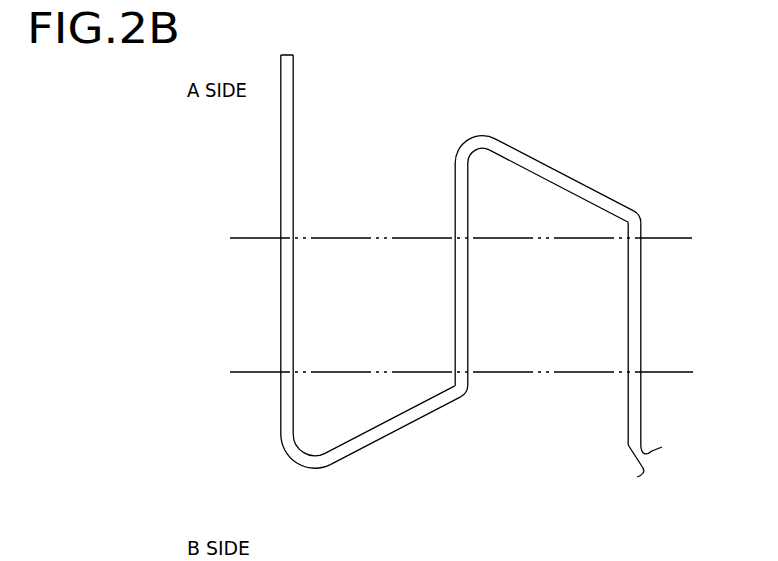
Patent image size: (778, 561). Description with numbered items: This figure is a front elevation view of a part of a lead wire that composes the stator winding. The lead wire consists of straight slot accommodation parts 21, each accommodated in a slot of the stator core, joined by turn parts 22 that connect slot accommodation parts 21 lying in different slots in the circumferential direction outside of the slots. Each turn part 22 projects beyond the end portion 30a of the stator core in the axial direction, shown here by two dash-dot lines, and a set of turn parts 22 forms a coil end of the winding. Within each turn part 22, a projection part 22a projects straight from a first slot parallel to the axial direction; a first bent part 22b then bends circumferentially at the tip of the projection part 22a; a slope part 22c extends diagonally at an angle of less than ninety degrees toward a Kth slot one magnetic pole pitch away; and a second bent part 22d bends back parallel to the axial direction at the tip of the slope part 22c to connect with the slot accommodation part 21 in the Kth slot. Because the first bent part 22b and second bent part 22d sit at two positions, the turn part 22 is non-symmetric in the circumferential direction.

The slot accommodation part 21 is at (303, 304).
The turn part 22 is at (458, 301).
The projection part 22a is at (455, 203).
The first bent part 22b is at (470, 137).
The slope part 22c is at (567, 176).
The second bent part 22d is at (639, 211).
The end portion 30a is at (262, 236).